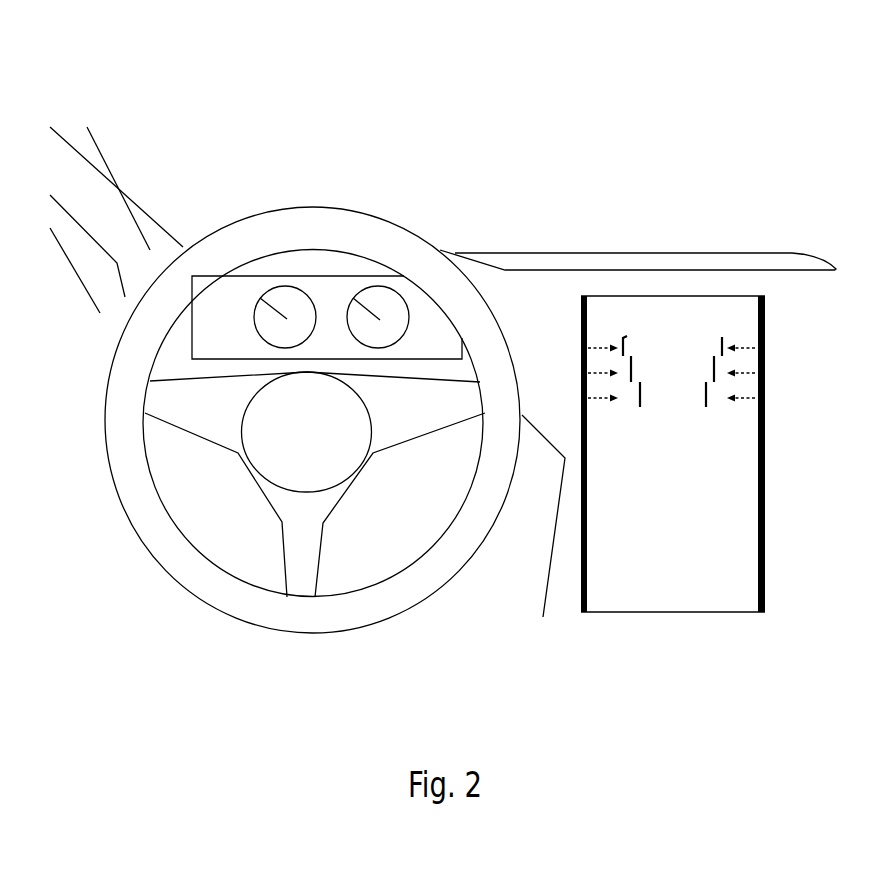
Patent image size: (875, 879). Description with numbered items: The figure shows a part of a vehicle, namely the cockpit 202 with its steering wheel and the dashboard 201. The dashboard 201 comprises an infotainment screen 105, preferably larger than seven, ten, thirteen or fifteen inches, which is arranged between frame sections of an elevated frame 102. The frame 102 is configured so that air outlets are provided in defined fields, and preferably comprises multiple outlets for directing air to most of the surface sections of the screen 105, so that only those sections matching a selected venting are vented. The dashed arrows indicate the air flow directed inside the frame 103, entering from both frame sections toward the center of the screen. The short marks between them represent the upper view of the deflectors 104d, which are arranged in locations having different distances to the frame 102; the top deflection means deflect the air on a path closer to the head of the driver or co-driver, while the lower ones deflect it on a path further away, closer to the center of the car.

The cockpit 202 is at (418, 130).
The dashboard 201 is at (543, 289).
The upper view of deflectors 104d is at (623, 337).
The air flow directed inside frame 103 is at (752, 345).
The infotainment screen 105 is at (749, 529).
The elevated frame 102 is at (765, 600).